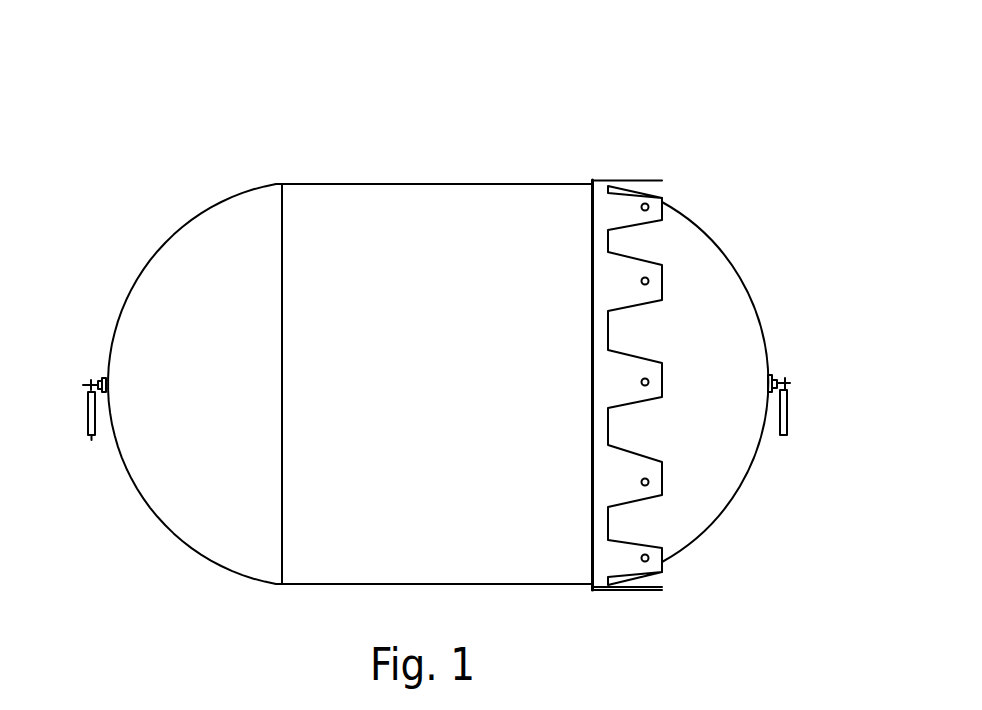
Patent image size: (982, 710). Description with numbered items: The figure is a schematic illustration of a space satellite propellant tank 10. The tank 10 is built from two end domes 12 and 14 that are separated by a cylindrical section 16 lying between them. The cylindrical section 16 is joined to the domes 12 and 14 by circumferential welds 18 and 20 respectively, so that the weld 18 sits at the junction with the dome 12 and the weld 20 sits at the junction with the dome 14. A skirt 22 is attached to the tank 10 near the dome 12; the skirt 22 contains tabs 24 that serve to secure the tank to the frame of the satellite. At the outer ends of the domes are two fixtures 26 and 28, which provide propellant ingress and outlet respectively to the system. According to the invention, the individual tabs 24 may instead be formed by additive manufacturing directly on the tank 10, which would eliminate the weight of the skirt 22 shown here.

The tank 10 is at (688, 86).
The dome 12 is at (710, 295).
The dome 14 is at (207, 272).
The cylindrical section 16 is at (433, 230).
The circumferential weld 18 is at (590, 508).
The circumferential weld 20 is at (283, 238).
The skirt 22 is at (602, 233).
The tabs 24 is at (630, 275).
The fixture 26 is at (787, 383).
The fixture 28 is at (85, 388).